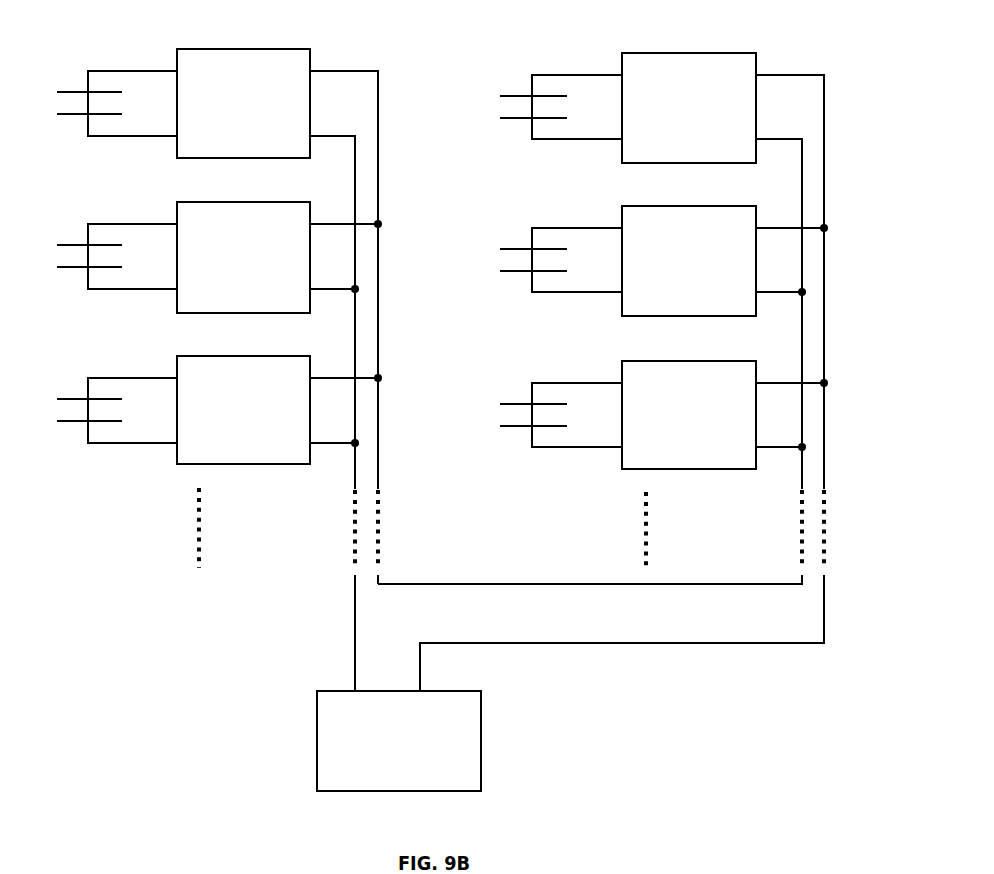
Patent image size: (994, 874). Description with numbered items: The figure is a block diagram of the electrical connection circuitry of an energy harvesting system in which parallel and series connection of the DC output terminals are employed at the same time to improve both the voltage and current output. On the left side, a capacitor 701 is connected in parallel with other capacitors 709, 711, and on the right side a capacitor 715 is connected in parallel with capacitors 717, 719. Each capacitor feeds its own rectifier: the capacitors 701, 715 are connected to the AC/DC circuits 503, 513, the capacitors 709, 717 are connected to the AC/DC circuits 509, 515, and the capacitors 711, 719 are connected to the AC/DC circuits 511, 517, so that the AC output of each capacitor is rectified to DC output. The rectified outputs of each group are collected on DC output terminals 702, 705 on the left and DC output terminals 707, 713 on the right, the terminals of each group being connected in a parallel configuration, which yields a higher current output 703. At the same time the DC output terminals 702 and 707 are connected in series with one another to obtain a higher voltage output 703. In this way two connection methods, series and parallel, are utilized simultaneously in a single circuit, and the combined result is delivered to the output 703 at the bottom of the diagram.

The capacitor 701 is at (68, 92).
The capacitor 709 is at (68, 245).
The capacitor 711 is at (64, 399).
The capacitor 715 is at (511, 96).
The capacitor 717 is at (513, 249).
The capacitor 719 is at (509, 404).
The AC/DC circuit 503 is at (288, 48).
The AC/DC circuit 509 is at (288, 202).
The AC/DC circuit 511 is at (288, 356).
The AC/DC circuit 513 is at (733, 52).
The AC/DC circuit 515 is at (733, 206).
The AC/DC circuit 517 is at (733, 360).
The DC output terminal 702 is at (378, 405).
The DC output terminal 705 is at (355, 463).
The DC output terminal 707 is at (824, 412).
The DC output terminal 713 is at (800, 477).
The output 703 is at (470, 691).